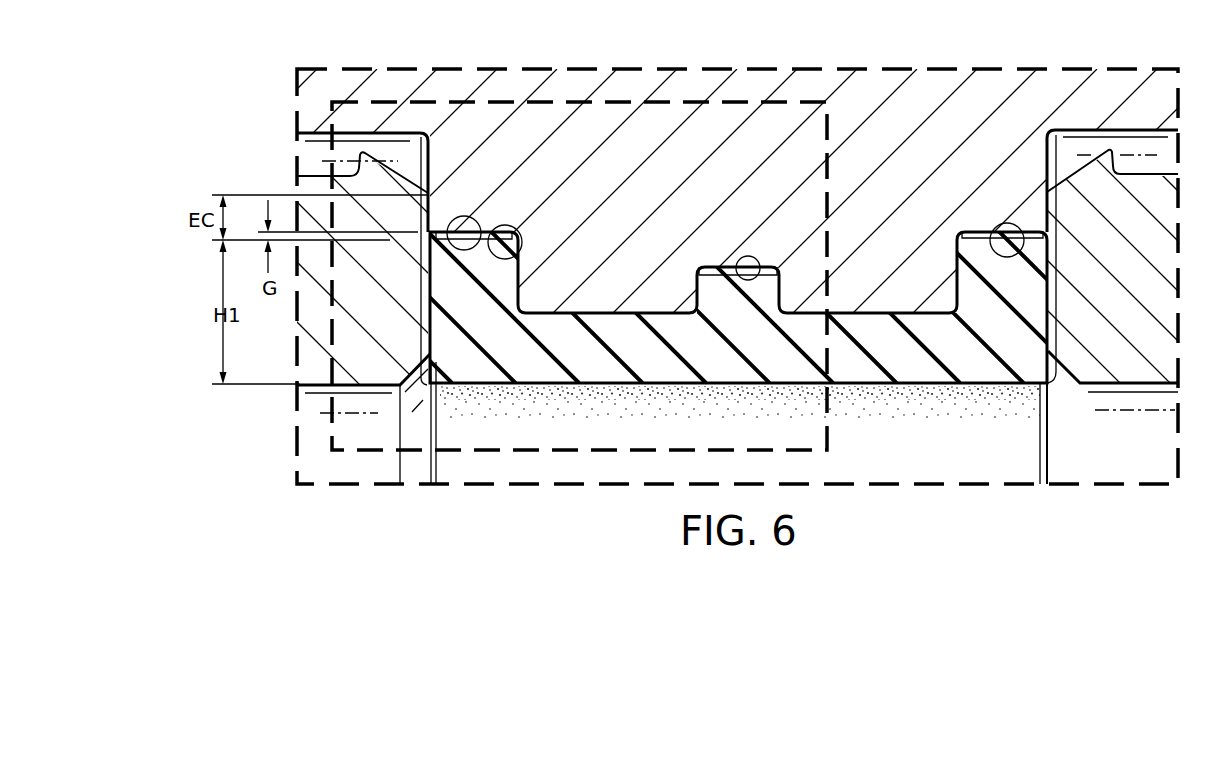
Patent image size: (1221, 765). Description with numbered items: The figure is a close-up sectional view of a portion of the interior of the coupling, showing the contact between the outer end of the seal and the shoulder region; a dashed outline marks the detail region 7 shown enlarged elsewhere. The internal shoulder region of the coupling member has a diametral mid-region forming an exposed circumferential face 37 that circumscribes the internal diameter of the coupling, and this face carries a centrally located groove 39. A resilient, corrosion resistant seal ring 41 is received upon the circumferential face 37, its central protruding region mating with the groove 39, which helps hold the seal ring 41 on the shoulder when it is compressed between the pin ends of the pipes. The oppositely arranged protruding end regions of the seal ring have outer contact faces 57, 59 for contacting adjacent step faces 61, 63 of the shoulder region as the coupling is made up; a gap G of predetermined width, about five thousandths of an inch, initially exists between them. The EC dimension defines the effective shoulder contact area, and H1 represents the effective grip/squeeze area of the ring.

The region shown enlarged in FIG. 7 is at (571, 97).
The circumferential face 37 is at (652, 318).
The groove 39 is at (758, 265).
The seal ring 41 is at (857, 368).
The outer contact face 57 is at (482, 236).
The outer contact face 59 is at (978, 236).
The step face 61 is at (520, 261).
The step face 63 is at (1025, 232).